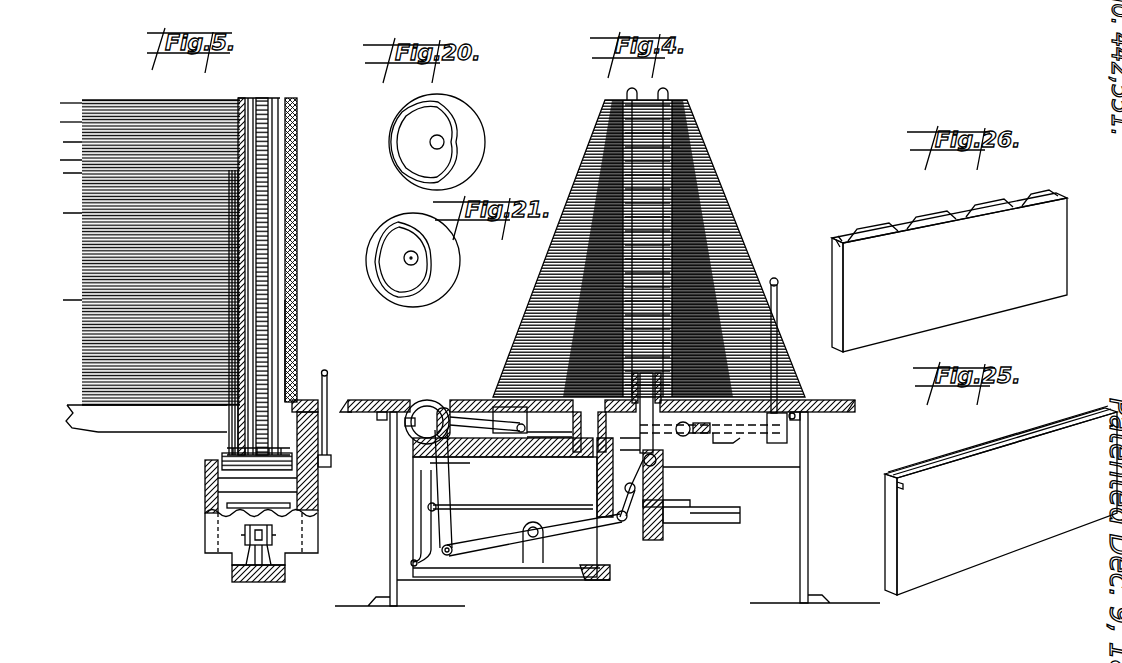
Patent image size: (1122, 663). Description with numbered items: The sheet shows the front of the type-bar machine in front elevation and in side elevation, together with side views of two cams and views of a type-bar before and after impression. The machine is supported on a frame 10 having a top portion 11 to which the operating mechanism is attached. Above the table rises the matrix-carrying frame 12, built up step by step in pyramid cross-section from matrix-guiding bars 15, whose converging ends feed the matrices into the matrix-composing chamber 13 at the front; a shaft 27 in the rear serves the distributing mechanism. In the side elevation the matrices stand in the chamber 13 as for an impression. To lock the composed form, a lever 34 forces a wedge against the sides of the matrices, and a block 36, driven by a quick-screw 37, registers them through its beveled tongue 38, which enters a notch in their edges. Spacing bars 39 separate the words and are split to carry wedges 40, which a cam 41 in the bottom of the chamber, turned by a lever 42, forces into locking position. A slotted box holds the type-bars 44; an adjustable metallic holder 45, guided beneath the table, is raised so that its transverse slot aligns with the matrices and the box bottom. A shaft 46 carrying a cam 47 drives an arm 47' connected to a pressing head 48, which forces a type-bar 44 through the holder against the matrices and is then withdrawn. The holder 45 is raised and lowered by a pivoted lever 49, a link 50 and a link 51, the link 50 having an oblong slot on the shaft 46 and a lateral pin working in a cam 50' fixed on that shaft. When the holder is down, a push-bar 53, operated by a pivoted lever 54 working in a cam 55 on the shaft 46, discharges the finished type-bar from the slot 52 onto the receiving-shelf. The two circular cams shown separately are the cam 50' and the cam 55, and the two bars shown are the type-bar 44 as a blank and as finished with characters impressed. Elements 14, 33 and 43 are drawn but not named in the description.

In FIG. 4, the frame 10 is at (390, 568).
In FIG. 5, the top portion 11 is at (300, 400).
In FIG. 4, the top portion 11 is at (366, 402).
In FIG. 5, the matrix-carrying frame 12 is at (143, 105).
In FIG. 5, the matrix-composing chamber 13 is at (298, 101).
In FIG. 5, the plate 14 is at (289, 356).
In FIG. 4, the plate 14 is at (648, 413).
In FIG. 5, the matrix-guiding bars 15 is at (82, 120).
In FIG. 5, the shaft 27 is at (82, 103).
In FIG. 5, the bar 33 is at (215, 448).
In FIG. 4, the lever 34 is at (805, 416).
In FIG. 4, the block 36 is at (690, 433).
In FIG. 4, the quick-screw 37 is at (740, 445).
In FIG. 4, the beveled tongue 38 is at (653, 425).
In FIG. 5, the spacing plates or bars 39 is at (280, 103).
In FIG. 5, the wedge 40 is at (208, 480).
In FIG. 4, the wedge 40 is at (628, 444).
In FIG. 5, the cam 41 is at (298, 471).
In FIG. 4, the cam 41 is at (645, 461).
In FIG. 5, the lever 42 is at (329, 441).
In FIG. 4, the stud 43 is at (646, 388).
In FIG. 4, the type-bar 44 is at (680, 515).
In FIG. 26, the type-bar 44 is at (832, 282).
In FIG. 25, the type-bar 44 is at (893, 537).
In FIG. 5, the adjustable metallic holder 45 is at (320, 494).
In FIG. 4, the adjustable metallic holder 45 is at (604, 432).
In FIG. 4, the shaft 46 is at (485, 431).
In FIG. 4, the cam 47 is at (429, 402).
In FIG. 4, the arm 47' is at (503, 424).
In FIG. 4, the pressing head 48 is at (540, 436).
In FIG. 5, the pivoted lever 49 is at (273, 536).
In FIG. 4, the pivoted lever 49 is at (548, 535).
In FIG. 4, the link 50 is at (495, 498).
In FIG. 20, the cam 50' is at (453, 142).
In FIG. 4, the cam 50' is at (464, 399).
In FIG. 4, the link 51 is at (630, 502).
In FIG. 5, the slot 52 is at (206, 513).
In FIG. 4, the slot 52 is at (662, 503).
In FIG. 4, the push-bar 53 is at (532, 535).
In FIG. 4, the pivoted lever 54 is at (430, 478).
In FIG. 21, the cam 55 is at (452, 260).